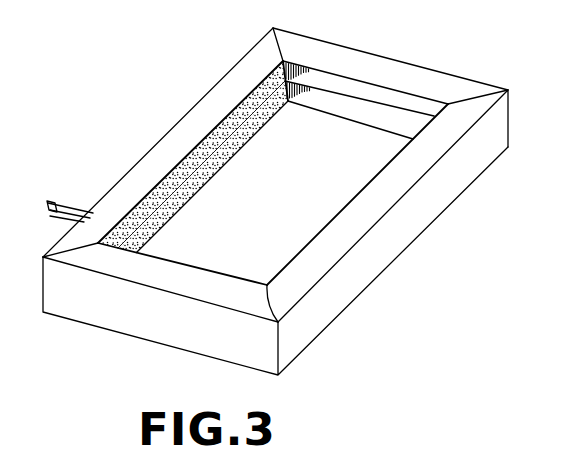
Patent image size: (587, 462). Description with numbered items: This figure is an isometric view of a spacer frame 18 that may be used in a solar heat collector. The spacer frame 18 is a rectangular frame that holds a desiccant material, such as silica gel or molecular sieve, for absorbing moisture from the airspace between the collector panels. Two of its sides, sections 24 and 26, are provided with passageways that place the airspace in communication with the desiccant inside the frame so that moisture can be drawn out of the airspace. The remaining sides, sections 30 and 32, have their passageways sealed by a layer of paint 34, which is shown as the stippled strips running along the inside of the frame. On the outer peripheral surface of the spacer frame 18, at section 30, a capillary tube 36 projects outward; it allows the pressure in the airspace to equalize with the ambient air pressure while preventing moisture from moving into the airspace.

The spacer frame 18 is at (438, 56).
The section 24 is at (352, 53).
The section 26 is at (367, 280).
The section 30 is at (165, 135).
The section 32 is at (143, 323).
The layer of paint 34 is at (222, 118).
The capillary tube 36 is at (65, 209).